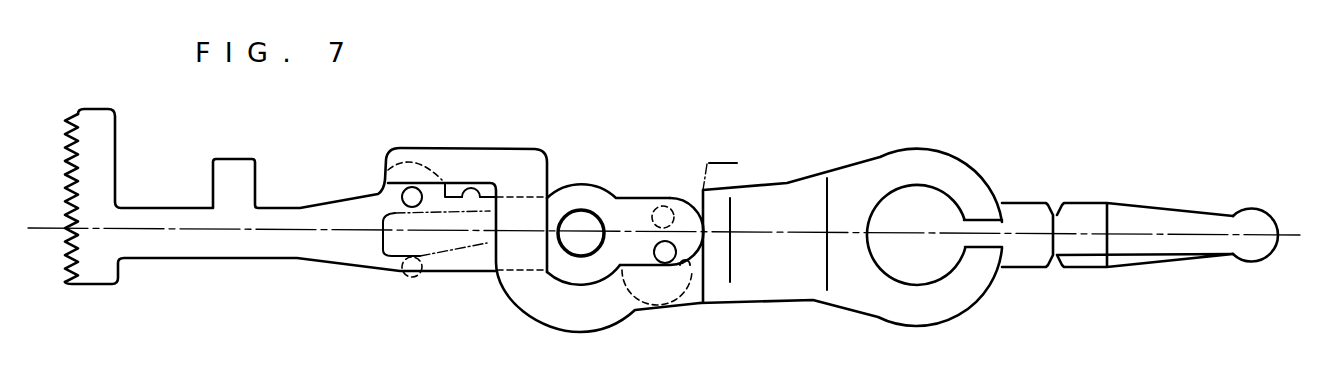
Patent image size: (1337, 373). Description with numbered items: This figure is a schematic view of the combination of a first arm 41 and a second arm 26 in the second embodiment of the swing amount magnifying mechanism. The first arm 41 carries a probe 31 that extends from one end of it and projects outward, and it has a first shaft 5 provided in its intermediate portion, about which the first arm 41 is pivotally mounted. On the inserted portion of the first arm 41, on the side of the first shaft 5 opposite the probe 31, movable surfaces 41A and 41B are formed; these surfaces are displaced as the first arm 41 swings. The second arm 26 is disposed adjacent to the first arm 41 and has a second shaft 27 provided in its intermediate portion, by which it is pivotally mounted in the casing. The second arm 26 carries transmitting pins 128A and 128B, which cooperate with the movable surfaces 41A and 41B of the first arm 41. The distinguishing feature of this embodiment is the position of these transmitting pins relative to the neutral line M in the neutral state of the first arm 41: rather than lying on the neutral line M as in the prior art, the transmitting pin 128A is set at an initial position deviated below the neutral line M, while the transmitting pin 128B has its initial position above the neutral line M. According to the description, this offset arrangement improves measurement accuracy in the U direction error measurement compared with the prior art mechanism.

The second arm 26 is at (300, 243).
The transmitting pin 128B is at (412, 190).
The movable surface 41B is at (482, 190).
The second shaft 27 is at (581, 232).
The movable surface 41A is at (678, 230).
The transmitting pin 128A is at (663, 217).
The first arm 41 is at (808, 188).
The first shaft 5 is at (917, 233).
The probe 31 is at (1162, 210).
The neutral line M is at (1296, 222).